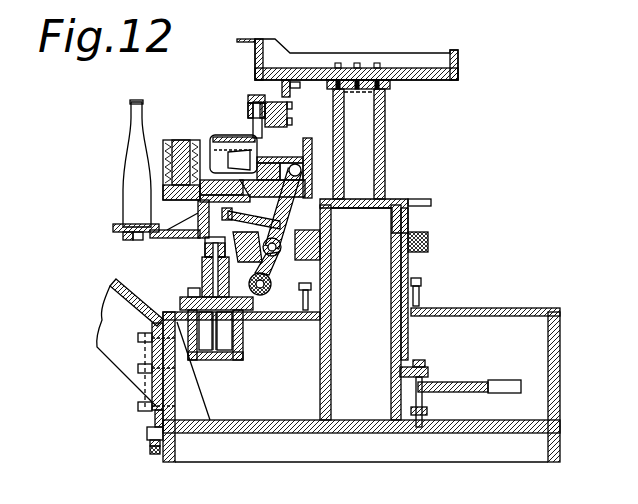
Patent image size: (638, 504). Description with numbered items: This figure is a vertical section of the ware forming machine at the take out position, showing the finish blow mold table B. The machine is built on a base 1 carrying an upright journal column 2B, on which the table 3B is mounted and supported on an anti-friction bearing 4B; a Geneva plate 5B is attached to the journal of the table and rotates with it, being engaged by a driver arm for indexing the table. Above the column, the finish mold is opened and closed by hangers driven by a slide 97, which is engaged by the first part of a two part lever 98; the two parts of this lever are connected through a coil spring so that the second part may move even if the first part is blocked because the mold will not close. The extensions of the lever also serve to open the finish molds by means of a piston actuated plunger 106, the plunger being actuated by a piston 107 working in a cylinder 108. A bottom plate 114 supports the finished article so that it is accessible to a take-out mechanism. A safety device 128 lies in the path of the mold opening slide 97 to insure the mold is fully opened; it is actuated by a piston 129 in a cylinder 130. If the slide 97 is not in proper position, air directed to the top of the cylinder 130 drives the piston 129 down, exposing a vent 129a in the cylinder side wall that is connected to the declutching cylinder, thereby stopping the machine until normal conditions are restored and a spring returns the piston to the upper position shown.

The base 1 is at (560, 358).
The journal column 2B is at (392, 326).
The table 3B is at (410, 200).
The anti-friction bearing 4B is at (428, 405).
The Geneva plate 5B is at (466, 382).
The finish blow mold table B is at (472, 137).
The slide 97 is at (240, 137).
The two part lever 98 is at (270, 270).
The plunger 106 is at (202, 273).
The piston 107 is at (245, 328).
The cylinder 108 is at (245, 352).
The bottom plate 114 is at (157, 236).
The safety device 128 is at (265, 134).
The piston 129 is at (262, 104).
The vent 129a is at (262, 110).
The cylinder 130 is at (259, 95).